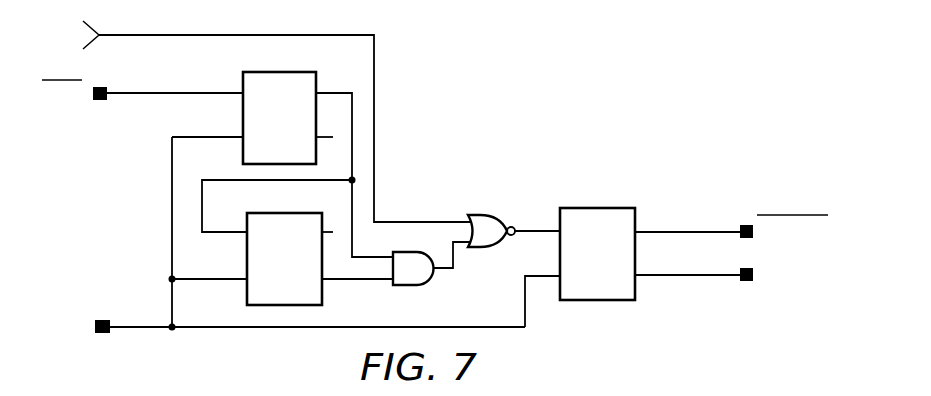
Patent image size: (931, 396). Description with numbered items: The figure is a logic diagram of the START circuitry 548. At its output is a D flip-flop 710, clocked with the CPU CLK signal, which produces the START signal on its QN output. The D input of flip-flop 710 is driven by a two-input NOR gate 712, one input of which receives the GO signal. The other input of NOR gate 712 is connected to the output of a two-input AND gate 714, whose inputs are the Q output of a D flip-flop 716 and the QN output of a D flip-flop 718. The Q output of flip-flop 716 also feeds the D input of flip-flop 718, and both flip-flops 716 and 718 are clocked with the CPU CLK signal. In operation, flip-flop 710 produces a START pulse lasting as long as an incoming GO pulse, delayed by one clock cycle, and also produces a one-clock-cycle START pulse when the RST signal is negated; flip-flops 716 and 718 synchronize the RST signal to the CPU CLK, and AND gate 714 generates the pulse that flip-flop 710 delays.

The START circuitry 548 is at (530, 108).
The D flip-flop 710 is at (610, 300).
The 2-input NOR gate 712 is at (490, 213).
The 2-input AND gate 714 is at (414, 285).
The D flip-flop 716 is at (270, 72).
The D flip-flop 718 is at (267, 213).